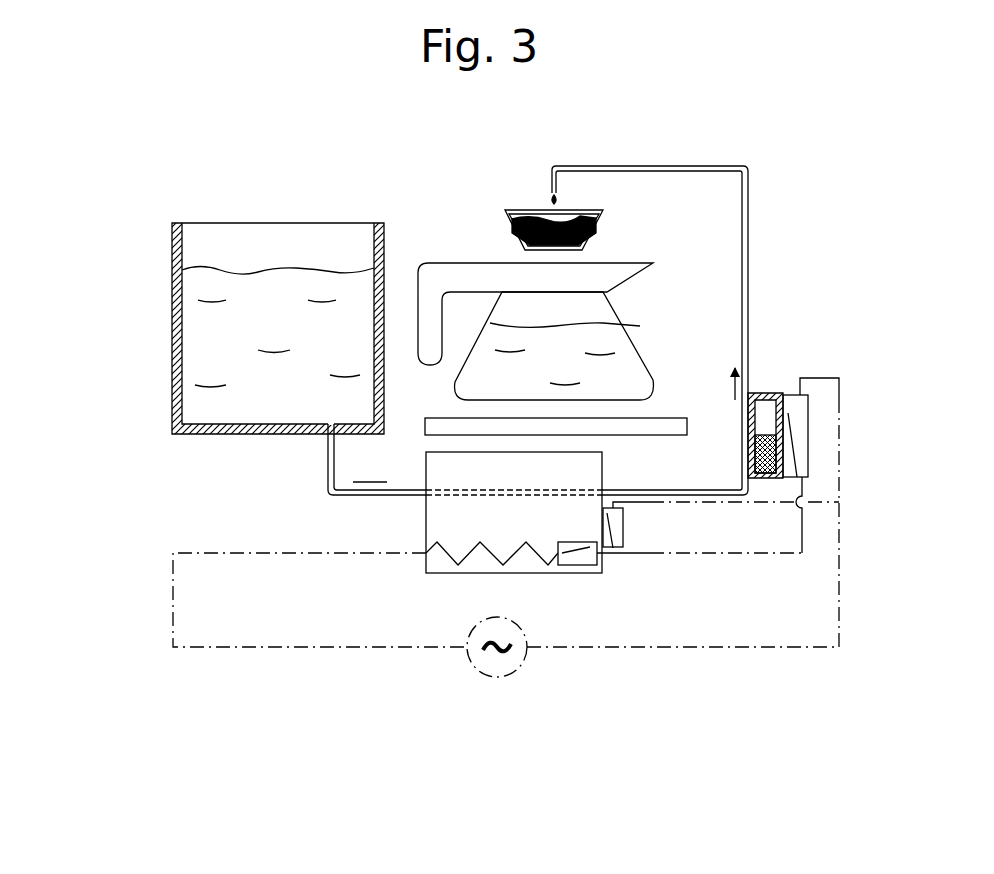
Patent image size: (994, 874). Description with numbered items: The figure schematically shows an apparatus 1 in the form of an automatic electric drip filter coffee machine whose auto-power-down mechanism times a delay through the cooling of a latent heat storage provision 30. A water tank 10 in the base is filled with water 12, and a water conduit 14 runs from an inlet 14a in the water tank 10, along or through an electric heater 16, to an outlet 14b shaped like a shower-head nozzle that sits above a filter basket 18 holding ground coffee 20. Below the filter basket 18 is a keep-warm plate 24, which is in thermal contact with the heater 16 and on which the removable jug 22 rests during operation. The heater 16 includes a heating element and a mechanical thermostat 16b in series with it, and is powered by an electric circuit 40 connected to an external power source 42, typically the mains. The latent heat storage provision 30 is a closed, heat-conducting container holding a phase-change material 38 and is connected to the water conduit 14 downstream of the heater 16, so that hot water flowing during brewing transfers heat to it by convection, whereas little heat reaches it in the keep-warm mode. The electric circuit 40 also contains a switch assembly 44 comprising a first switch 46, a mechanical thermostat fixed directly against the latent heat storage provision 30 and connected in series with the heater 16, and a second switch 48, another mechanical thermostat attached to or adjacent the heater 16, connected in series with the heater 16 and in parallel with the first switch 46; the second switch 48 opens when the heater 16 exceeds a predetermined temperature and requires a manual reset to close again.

The apparatus 1 is at (138, 207).
The water tank 10 is at (172, 312).
The water 12 is at (277, 323).
The water conduit 14 is at (745, 257).
The inlet 14a is at (328, 427).
The outlet 14b is at (550, 183).
The electric heater 16 is at (460, 522).
The thermostat 16b is at (582, 565).
The filter basket 18 is at (510, 243).
The ground coffee 20 is at (614, 222).
The jug 22 is at (650, 317).
The keep-warm plate 24 is at (660, 427).
The latent heat storage provision 30 is at (783, 381).
The phase-change material 38 is at (750, 452).
The electric circuit 40 is at (147, 596).
The external power source 42 is at (508, 667).
The switch assembly 44 is at (820, 455).
The first switch 46 is at (800, 413).
The second switch 48 is at (625, 525).